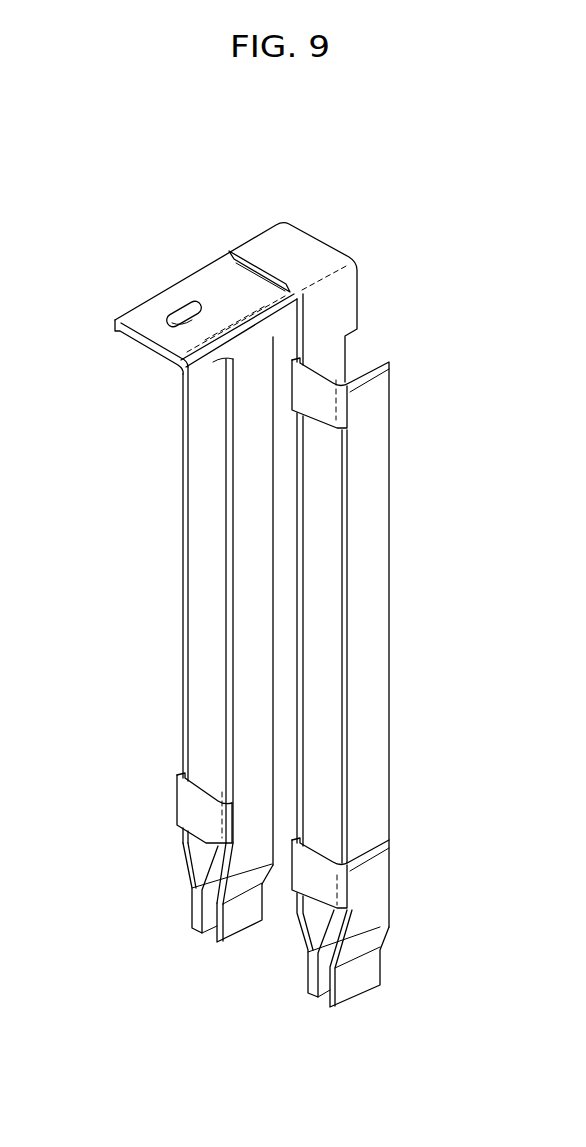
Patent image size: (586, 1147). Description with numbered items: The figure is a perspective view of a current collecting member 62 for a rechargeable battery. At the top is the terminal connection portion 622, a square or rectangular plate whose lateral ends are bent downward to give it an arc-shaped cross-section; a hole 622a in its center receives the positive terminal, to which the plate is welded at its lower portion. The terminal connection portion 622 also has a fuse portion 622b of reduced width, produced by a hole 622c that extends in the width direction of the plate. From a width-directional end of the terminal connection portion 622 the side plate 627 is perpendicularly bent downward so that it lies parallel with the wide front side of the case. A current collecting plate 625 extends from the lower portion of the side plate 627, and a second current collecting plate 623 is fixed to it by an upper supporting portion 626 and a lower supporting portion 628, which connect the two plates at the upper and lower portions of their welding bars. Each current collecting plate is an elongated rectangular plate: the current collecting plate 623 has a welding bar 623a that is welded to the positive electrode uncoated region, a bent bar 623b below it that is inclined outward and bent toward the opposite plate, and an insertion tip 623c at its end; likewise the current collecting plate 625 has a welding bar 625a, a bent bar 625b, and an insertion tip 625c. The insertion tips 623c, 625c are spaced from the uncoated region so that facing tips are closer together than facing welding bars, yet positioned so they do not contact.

The current collecting member 62 is at (325, 222).
The terminal connection portion 622 is at (213, 278).
The hole 622a is at (170, 313).
The fuse portion 622b is at (327, 293).
The hole 622c is at (252, 265).
The current collecting plate 623 is at (205, 515).
The welding bar 623a is at (188, 690).
The bent bar 623b is at (183, 866).
The insertion tip 623c is at (192, 905).
The current collecting plate 625 is at (250, 582).
The welding bar 625a is at (248, 738).
The bent bar 625b is at (250, 880).
The insertion tip 625c is at (242, 915).
The supporting portion 626 is at (312, 410).
The side plate 627 is at (342, 318).
The supporting portion 628 is at (316, 878).